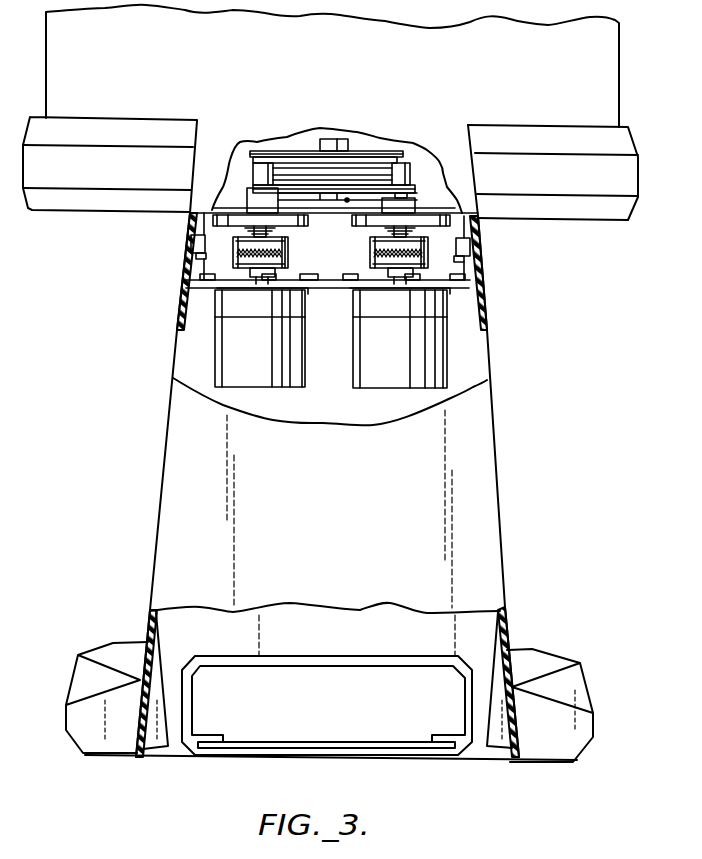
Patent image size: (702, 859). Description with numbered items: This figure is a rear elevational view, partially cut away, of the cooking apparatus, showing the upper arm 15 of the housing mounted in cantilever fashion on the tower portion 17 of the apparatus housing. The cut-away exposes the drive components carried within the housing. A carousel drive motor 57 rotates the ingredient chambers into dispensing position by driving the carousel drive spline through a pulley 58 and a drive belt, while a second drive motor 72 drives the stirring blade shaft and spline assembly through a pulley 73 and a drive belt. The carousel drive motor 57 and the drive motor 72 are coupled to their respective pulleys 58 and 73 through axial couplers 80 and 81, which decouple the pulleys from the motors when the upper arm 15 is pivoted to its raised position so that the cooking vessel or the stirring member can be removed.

The upper arm 15 is at (72, 230).
The tower portion 17 is at (146, 461).
The carousel drive motor 57 is at (215, 360).
The pulley 58 is at (258, 151).
The drive motor 72 is at (356, 360).
The pulley 73 is at (410, 179).
The axial coupler 80 is at (288, 248).
The axial coupler 81 is at (370, 247).